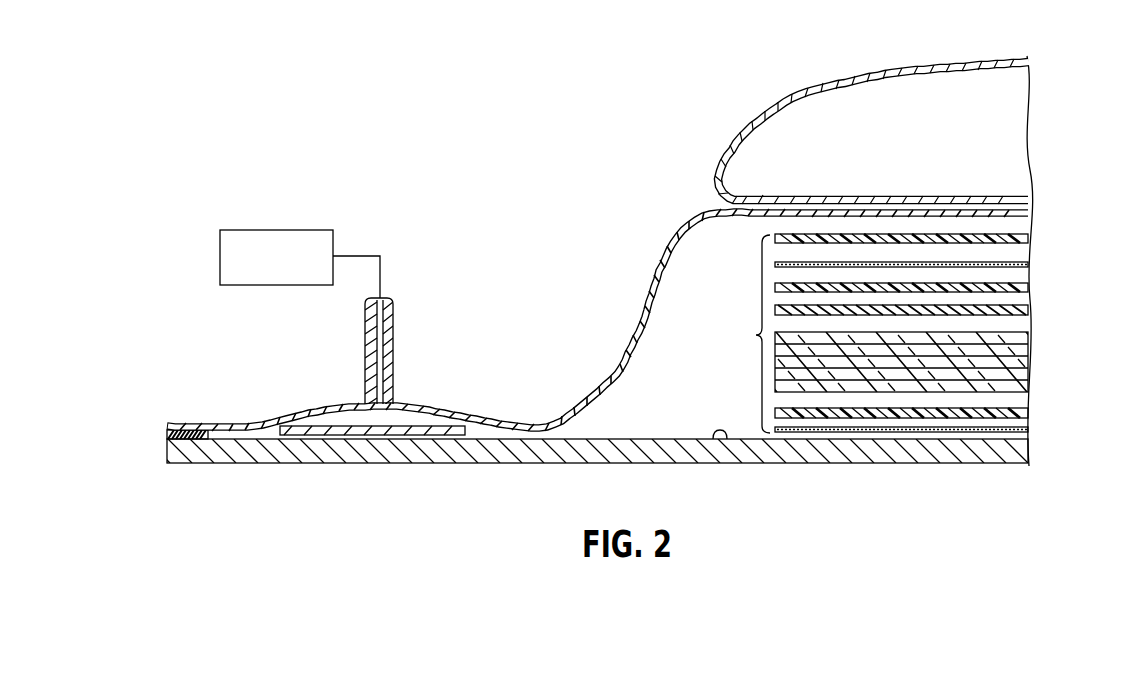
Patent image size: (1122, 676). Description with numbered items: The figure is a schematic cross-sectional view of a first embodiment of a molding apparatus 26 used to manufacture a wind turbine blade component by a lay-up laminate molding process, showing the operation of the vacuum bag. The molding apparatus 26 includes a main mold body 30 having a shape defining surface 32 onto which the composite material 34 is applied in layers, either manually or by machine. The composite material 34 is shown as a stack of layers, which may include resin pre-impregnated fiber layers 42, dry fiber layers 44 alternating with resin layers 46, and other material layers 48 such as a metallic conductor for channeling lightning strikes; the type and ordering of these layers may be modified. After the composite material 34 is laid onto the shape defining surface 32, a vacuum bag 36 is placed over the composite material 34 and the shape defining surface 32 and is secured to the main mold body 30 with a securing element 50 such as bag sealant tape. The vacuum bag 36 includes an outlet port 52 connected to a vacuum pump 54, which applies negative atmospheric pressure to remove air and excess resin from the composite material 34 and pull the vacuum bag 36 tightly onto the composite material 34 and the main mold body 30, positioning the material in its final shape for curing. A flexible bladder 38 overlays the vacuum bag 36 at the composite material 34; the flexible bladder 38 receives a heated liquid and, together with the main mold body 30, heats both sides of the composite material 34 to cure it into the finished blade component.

The molding apparatus 26 is at (533, 391).
The main mold body 30 is at (445, 464).
The shape defining surface 32 is at (727, 441).
The composite material 34 is at (748, 334).
The vacuum bag 36 is at (641, 314).
The flexible bladder 38 is at (921, 64).
The resin pre-impregnated fiber layers 42 is at (1033, 360).
The dry fiber layers 44 is at (1033, 239).
The resin layers 46 is at (1033, 265).
The other material layers 48 is at (1033, 311).
The securing element 50 is at (172, 432).
The outlet port 52 is at (396, 330).
The vacuum pump 54 is at (298, 229).